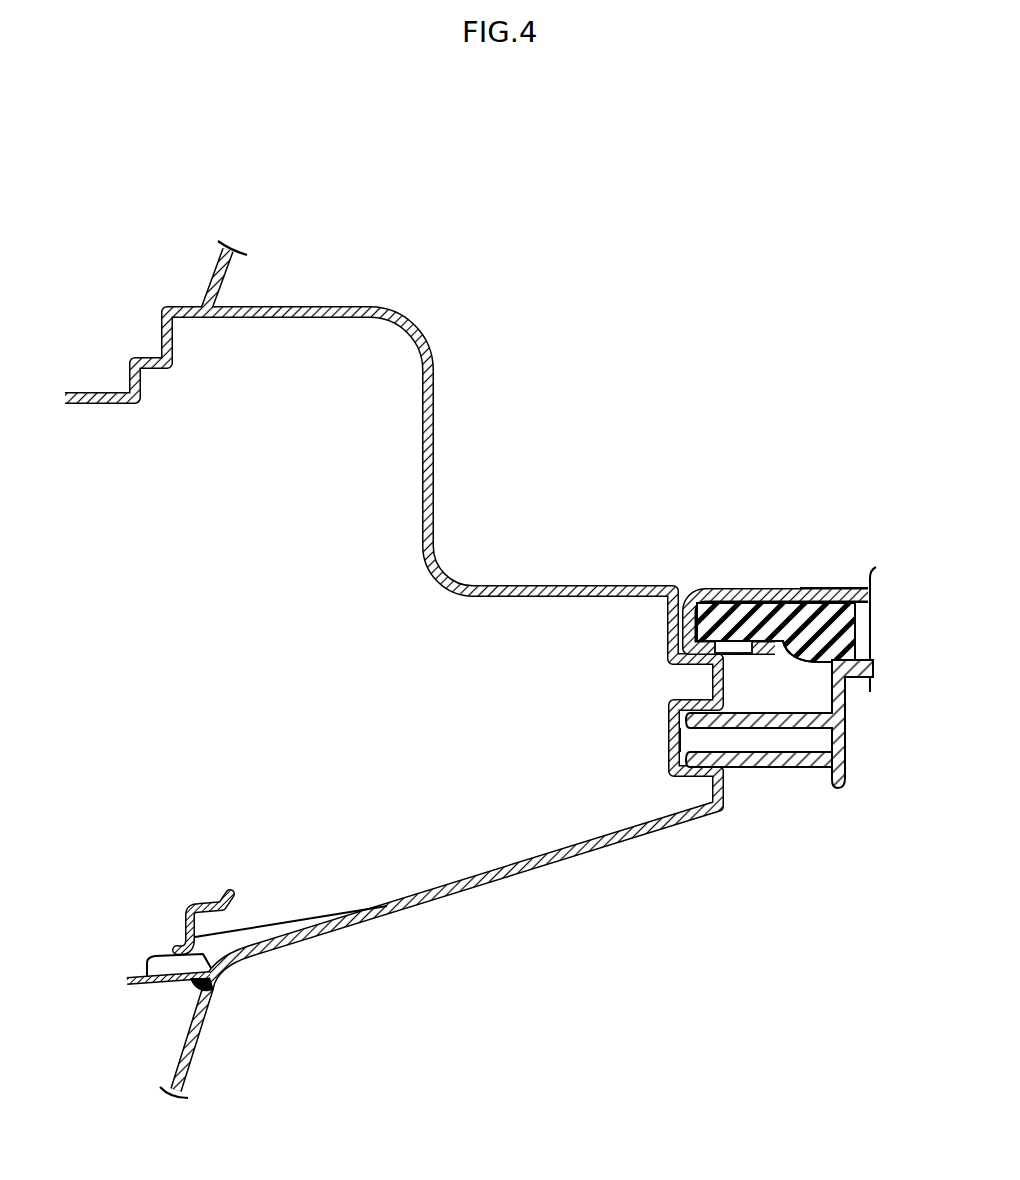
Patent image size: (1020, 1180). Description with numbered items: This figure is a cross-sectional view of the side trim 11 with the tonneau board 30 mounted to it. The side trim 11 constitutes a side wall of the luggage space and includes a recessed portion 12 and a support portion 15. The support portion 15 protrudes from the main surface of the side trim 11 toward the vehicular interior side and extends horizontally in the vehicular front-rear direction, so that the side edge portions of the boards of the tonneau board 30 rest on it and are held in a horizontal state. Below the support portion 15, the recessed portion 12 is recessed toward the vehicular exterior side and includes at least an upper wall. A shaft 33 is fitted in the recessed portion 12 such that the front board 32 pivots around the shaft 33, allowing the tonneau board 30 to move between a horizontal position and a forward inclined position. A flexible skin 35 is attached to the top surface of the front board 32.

The side trim 11 is at (415, 669).
The recessed portion 12 is at (683, 745).
The support portion 15 is at (692, 668).
The tonneau board 30 is at (773, 585).
The front board 32 is at (783, 620).
The shaft 33 is at (805, 762).
The skin 35 is at (832, 588).